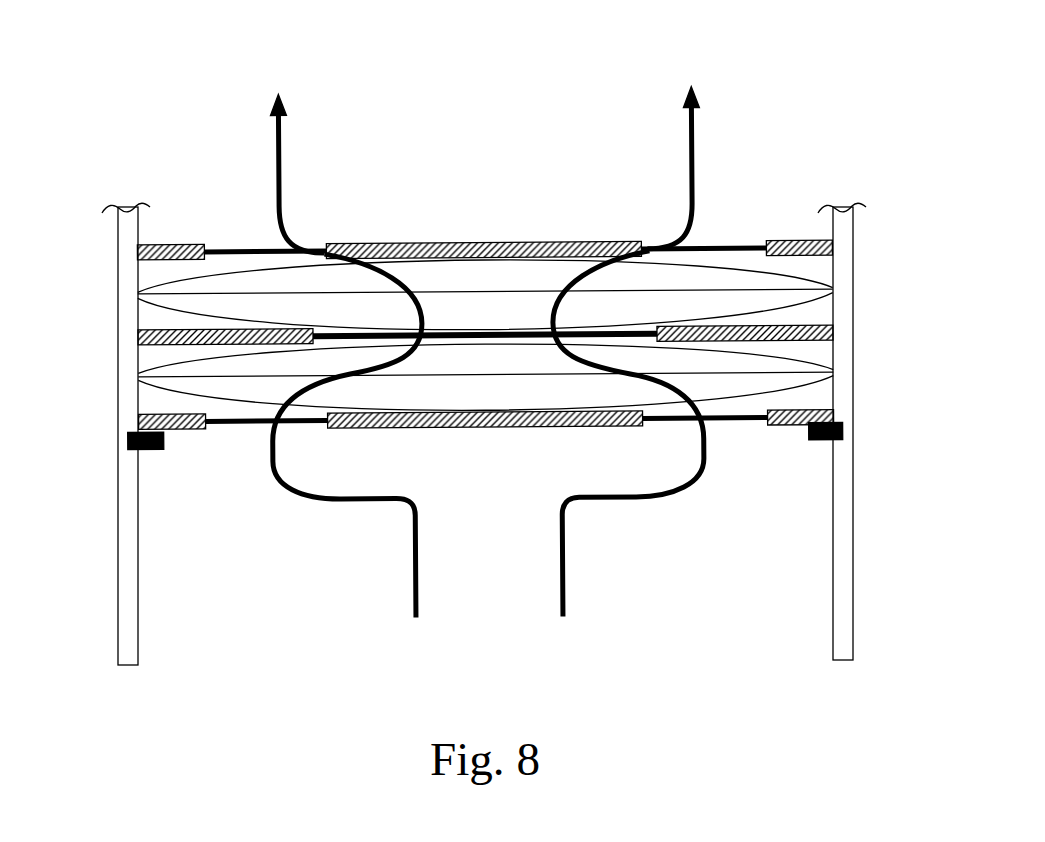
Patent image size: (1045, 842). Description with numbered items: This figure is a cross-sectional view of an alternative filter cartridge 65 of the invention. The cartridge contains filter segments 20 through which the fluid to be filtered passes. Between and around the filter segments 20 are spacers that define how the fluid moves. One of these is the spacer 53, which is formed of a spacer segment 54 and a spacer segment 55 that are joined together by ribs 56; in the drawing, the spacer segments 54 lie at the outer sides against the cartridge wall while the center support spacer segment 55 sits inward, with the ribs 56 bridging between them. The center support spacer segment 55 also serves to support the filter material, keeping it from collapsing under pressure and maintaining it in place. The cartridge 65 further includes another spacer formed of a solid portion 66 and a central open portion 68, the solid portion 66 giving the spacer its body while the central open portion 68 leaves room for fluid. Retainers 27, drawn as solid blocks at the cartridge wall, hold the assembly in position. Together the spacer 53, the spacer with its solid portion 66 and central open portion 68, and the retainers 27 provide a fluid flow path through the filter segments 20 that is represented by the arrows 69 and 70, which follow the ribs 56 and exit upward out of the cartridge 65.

The filter cartridge 65 is at (103, 193).
The spacer segment 54 is at (165, 243).
The spacer segment 55 is at (527, 245).
The central open portion 68 is at (313, 330).
The solid portion 66 is at (138, 345).
The ribs 56 is at (312, 255).
The arrows 69 is at (282, 202).
The arrows 70 is at (697, 135).
The filter segments 20 is at (767, 363).
The retainers 27 is at (163, 447).
The spacer 53 is at (192, 205).